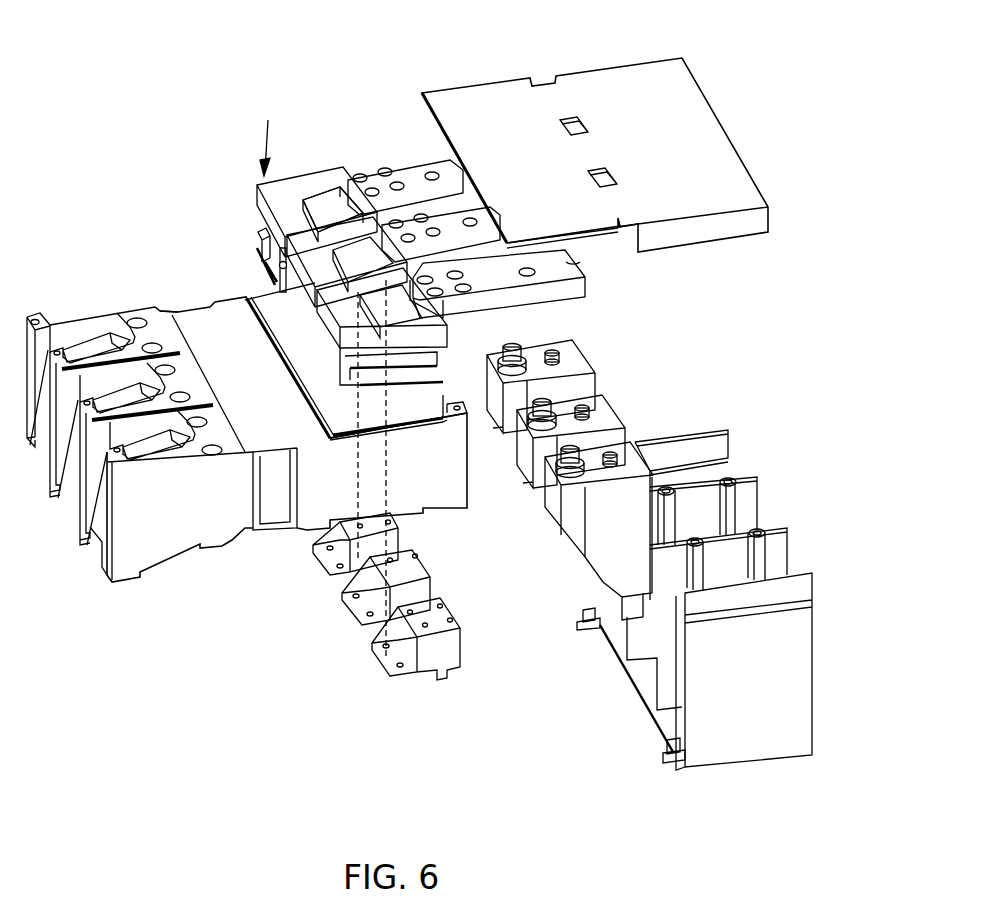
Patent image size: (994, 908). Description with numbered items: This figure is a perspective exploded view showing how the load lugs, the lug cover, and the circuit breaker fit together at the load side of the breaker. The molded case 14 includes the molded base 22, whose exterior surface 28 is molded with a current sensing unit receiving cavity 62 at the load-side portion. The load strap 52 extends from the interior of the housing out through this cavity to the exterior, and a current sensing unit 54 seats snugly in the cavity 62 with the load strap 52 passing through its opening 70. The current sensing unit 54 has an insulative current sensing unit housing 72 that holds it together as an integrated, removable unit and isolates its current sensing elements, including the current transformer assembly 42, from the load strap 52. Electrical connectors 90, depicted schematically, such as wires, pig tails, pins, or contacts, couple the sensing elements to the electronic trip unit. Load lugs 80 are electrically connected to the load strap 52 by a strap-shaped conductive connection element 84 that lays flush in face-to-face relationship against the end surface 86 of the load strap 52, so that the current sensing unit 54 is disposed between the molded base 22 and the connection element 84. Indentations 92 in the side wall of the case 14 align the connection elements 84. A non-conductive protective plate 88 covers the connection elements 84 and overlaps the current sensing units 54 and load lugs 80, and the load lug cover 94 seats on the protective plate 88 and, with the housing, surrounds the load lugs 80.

The molded case 14 is at (228, 520).
The molded base 22 is at (145, 311).
The exterior surface 28 is at (197, 333).
The current transformer assembly 42 is at (258, 233).
The load strap 52 is at (458, 638).
The current sensing unit 54 is at (268, 145).
The current sensing unit receiving cavity 62 is at (405, 438).
The opening 70 is at (338, 208).
The current sensing unit housing 72 is at (305, 188).
The load lugs 80 is at (603, 530).
The conductive connection element 84 is at (415, 176).
The end surface 86 is at (432, 600).
The protective plate 88 is at (632, 93).
The electrical connectors 90 is at (260, 252).
The indentations 92 is at (440, 398).
The load lug cover 94 is at (762, 740).